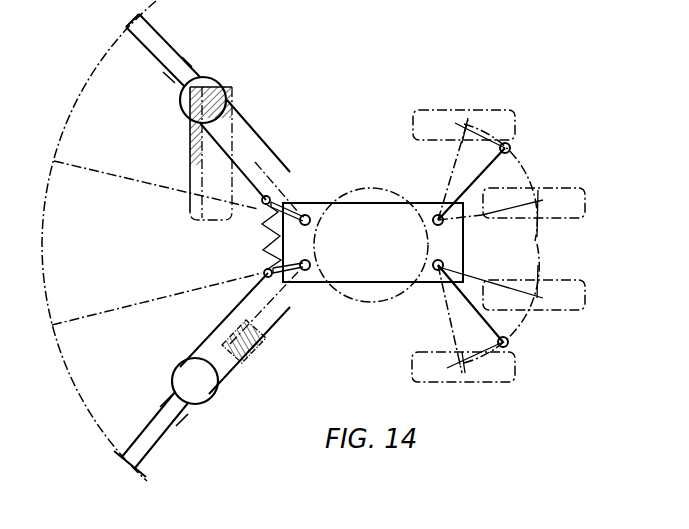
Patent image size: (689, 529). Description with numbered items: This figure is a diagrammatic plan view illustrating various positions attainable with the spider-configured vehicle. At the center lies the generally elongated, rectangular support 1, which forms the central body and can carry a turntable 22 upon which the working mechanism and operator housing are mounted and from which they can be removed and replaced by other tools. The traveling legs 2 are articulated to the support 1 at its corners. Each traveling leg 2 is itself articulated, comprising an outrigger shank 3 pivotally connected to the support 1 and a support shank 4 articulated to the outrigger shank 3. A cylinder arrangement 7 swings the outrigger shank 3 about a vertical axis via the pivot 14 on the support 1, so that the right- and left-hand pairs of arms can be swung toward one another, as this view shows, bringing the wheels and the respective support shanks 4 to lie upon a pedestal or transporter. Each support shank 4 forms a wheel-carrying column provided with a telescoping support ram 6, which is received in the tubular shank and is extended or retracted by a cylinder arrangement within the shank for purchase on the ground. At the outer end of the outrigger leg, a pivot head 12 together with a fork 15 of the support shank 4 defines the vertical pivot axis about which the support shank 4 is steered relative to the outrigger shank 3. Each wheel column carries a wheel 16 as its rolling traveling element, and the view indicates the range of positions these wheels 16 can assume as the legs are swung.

The support 1 is at (382, 203).
The traveling leg 2 is at (206, 245).
The outrigger shank 3 is at (215, 152).
The support shank 4 is at (174, 82).
The telescoping support ram 6 is at (143, 43).
The cylinder arrangement 7 is at (270, 226).
The pivot head 12 is at (204, 209).
The fork 15 is at (205, 77).
The pivot 14 is at (311, 265).
The wheel 16 is at (528, 190).
The turntable 22 is at (356, 301).